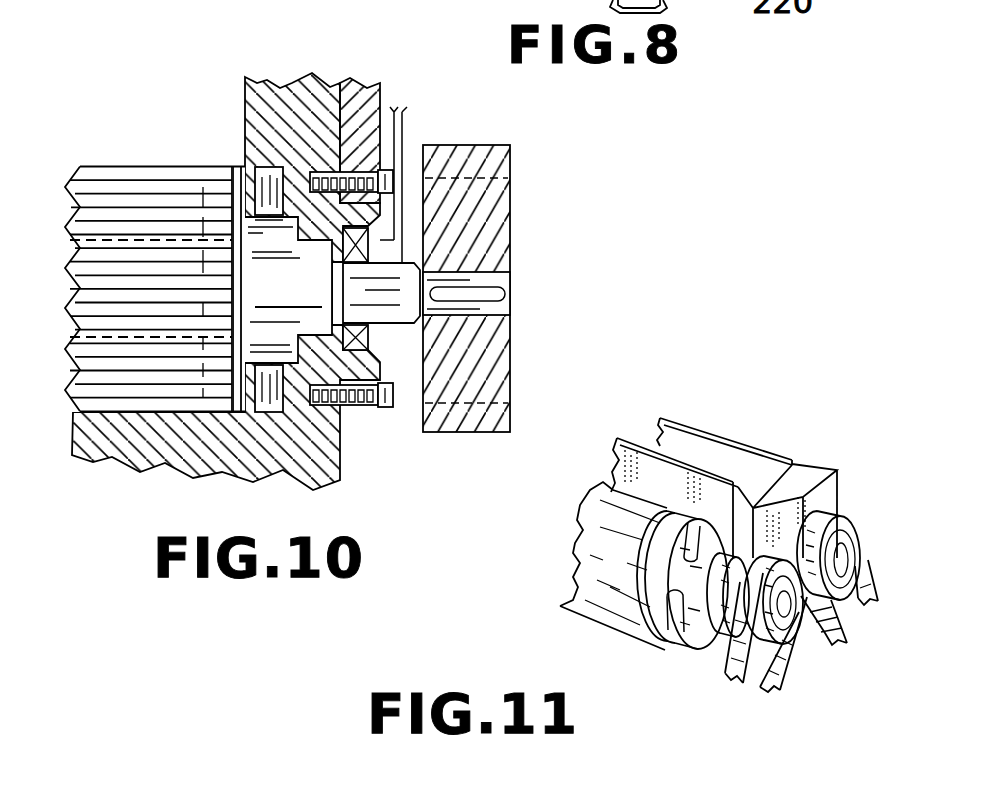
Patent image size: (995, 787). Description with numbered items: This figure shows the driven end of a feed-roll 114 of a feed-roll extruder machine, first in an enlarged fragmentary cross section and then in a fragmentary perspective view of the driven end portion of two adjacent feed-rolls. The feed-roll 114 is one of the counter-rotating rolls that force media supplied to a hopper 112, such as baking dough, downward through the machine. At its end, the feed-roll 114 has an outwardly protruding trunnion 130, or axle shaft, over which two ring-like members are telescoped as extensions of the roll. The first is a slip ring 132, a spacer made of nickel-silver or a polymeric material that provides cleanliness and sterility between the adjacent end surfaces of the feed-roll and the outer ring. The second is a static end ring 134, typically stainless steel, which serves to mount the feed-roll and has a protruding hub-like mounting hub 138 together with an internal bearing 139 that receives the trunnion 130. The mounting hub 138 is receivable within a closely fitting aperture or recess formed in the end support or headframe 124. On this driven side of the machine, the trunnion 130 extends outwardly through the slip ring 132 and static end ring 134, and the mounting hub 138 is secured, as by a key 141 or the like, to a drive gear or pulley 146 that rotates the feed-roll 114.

In FIG. 11, the hopper 112 is at (694, 451).
In FIG. 10, the feed-roll 114 is at (123, 188).
In FIG. 11, the feed-roll 114 is at (597, 580).
In FIG. 10, the headframe 124 is at (275, 100).
In FIG. 10, the trunnion 130 is at (288, 290).
In FIG. 11, the trunnion 130 is at (842, 562).
In FIG. 10, the slip ring 132 is at (240, 413).
In FIG. 11, the slip ring 132 is at (643, 610).
In FIG. 10, the static end ring 134 is at (256, 168).
In FIG. 11, the static end ring 134 is at (690, 617).
In FIG. 11, the mounting hub 138 is at (716, 648).
In FIG. 10, the internal bearing 139 is at (373, 335).
In FIG. 10, the key 141 is at (472, 293).
In FIG. 10, the drive gear or pulley 146 is at (478, 146).
In FIG. 11, the drive gear or pulley 146 is at (845, 617).